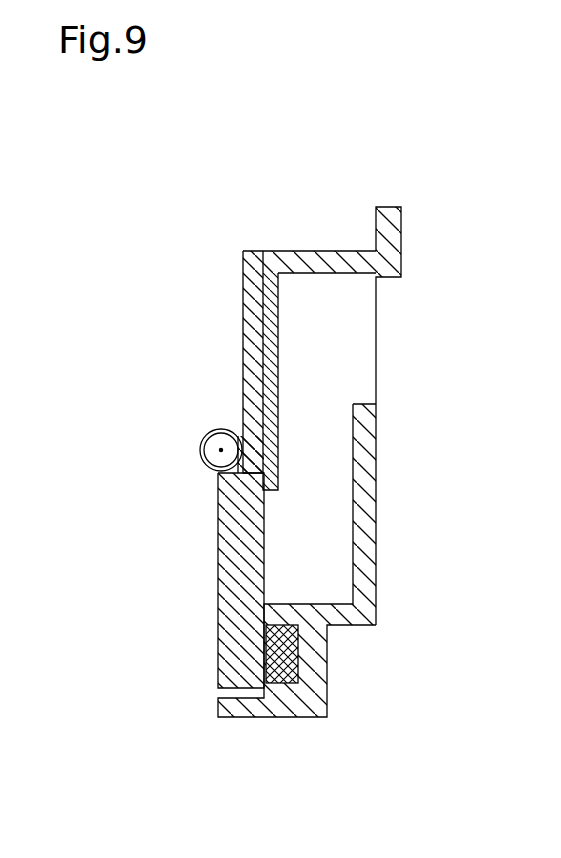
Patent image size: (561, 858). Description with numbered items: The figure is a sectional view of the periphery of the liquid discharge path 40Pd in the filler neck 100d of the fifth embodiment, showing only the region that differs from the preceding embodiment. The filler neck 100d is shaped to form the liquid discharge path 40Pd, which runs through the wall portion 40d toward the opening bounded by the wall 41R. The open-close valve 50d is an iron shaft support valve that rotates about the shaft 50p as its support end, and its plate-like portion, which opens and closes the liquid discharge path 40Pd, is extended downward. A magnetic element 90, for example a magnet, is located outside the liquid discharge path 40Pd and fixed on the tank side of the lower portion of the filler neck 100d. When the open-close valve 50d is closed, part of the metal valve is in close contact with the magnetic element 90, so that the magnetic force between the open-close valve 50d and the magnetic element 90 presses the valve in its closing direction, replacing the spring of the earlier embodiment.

The filler neck 100d is at (386, 206).
The door member 40d is at (243, 377).
The liquid discharge path 40Pd is at (288, 414).
The shaft 50p is at (217, 463).
The open-close valve 50d is at (218, 585).
The rib 41R is at (340, 583).
The magnetic element 90 is at (298, 656).